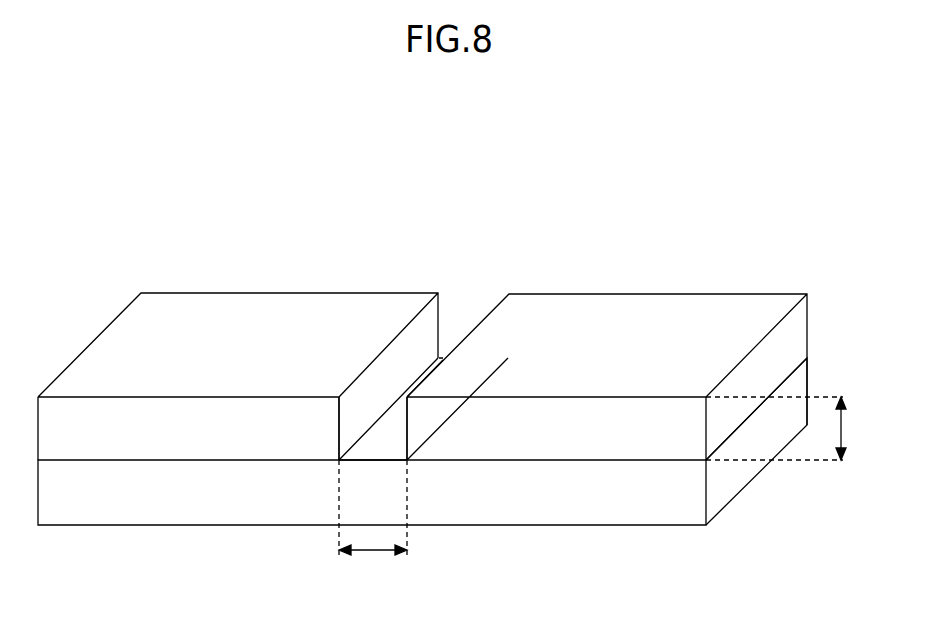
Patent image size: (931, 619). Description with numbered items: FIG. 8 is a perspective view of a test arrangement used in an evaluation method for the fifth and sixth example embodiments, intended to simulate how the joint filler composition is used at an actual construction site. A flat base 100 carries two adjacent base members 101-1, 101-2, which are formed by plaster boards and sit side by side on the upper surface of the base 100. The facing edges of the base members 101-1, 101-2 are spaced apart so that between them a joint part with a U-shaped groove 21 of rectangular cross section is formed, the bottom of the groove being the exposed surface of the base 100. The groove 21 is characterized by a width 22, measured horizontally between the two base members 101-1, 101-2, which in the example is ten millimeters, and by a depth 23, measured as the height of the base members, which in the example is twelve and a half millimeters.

The base 100 is at (622, 508).
The base member 101-1 is at (219, 313).
The base member 101-2 is at (622, 312).
The groove 21 is at (382, 440).
The width 22 is at (373, 519).
The depth 23 is at (787, 428).